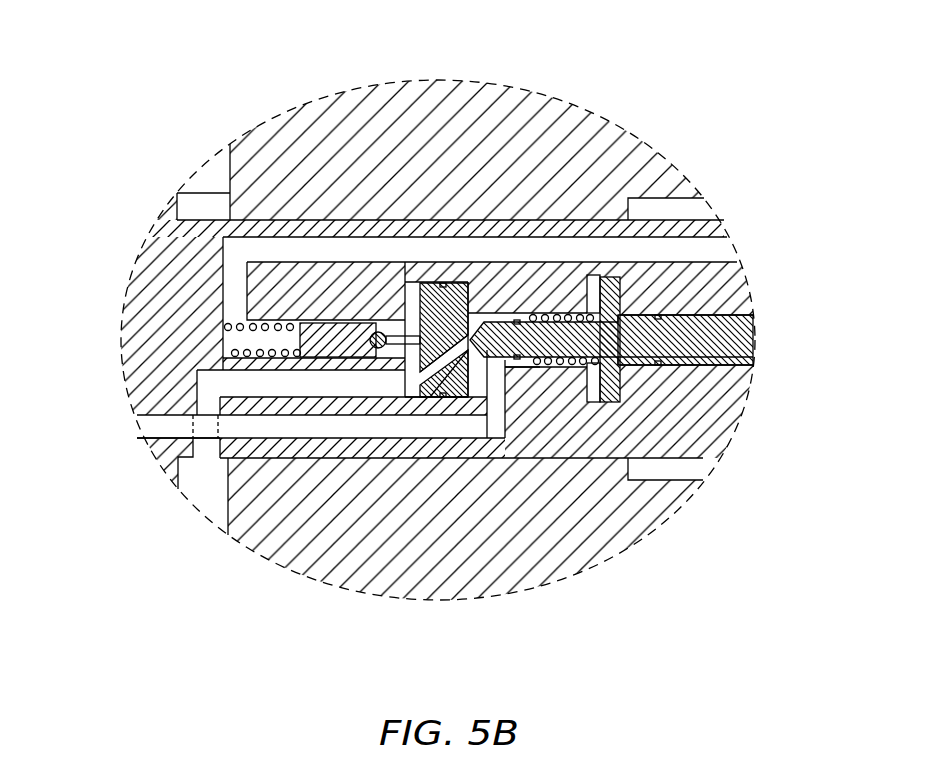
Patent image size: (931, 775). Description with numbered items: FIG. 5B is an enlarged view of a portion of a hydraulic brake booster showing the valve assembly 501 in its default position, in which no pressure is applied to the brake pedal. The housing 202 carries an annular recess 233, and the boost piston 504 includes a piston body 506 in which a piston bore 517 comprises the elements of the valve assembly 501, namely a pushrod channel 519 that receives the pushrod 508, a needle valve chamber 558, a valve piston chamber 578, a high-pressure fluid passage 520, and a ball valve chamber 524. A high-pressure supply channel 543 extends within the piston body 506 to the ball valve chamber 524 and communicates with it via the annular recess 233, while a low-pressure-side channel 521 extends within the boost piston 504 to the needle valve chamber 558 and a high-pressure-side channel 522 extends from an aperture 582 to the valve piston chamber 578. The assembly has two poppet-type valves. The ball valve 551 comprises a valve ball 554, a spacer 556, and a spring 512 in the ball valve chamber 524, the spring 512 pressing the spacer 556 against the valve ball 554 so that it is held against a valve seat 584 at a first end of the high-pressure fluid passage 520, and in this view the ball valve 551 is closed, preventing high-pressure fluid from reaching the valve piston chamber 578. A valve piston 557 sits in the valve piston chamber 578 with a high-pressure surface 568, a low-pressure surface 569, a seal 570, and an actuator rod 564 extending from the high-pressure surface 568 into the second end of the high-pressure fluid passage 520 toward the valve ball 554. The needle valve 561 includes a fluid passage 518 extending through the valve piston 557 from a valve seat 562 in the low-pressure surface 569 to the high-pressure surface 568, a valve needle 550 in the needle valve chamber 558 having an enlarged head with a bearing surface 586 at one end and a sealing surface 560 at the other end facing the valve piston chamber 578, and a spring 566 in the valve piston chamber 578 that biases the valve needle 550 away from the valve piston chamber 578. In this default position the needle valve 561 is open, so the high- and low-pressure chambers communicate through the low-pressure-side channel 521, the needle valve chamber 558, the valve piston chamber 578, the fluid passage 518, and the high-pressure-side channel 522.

The housing 202 is at (618, 532).
The annular recess 233 is at (705, 203).
The valve assembly 501 is at (230, 168).
The boost piston 504 is at (163, 280).
The piston body 506 is at (720, 398).
The pushrod 508 is at (706, 333).
The spring 512 is at (215, 342).
The piston bore 517 is at (735, 342).
The fluid passage 518 is at (392, 363).
The pushrod channel 519 is at (747, 352).
The high-pressure fluid passage 520 is at (350, 358).
The low-pressure-side channel 521 is at (257, 423).
The high-pressure-side channel 522 is at (257, 384).
The ball valve chamber 524 is at (217, 352).
The high-pressure supply channel 543 is at (565, 250).
The valve needle 550 is at (628, 242).
The ball valve 551 is at (252, 195).
The valve ball 554 is at (290, 528).
The spacer 556 is at (353, 305).
The valve piston 557 is at (432, 313).
The needle valve chamber 558 is at (553, 362).
The sealing surface 560 is at (440, 392).
The needle valve 561 is at (510, 283).
The valve seat 562 is at (562, 368).
The actuator rod 564 is at (388, 322).
The spring 566 is at (567, 276).
The high-pressure surface 568 is at (410, 295).
The low-pressure surface 569 is at (480, 292).
The seal 570 is at (562, 290).
The valve piston chamber 578 is at (492, 350).
The aperture 582 is at (205, 455).
The valve seat 584 is at (380, 300).
The bearing surface 586 is at (625, 380).